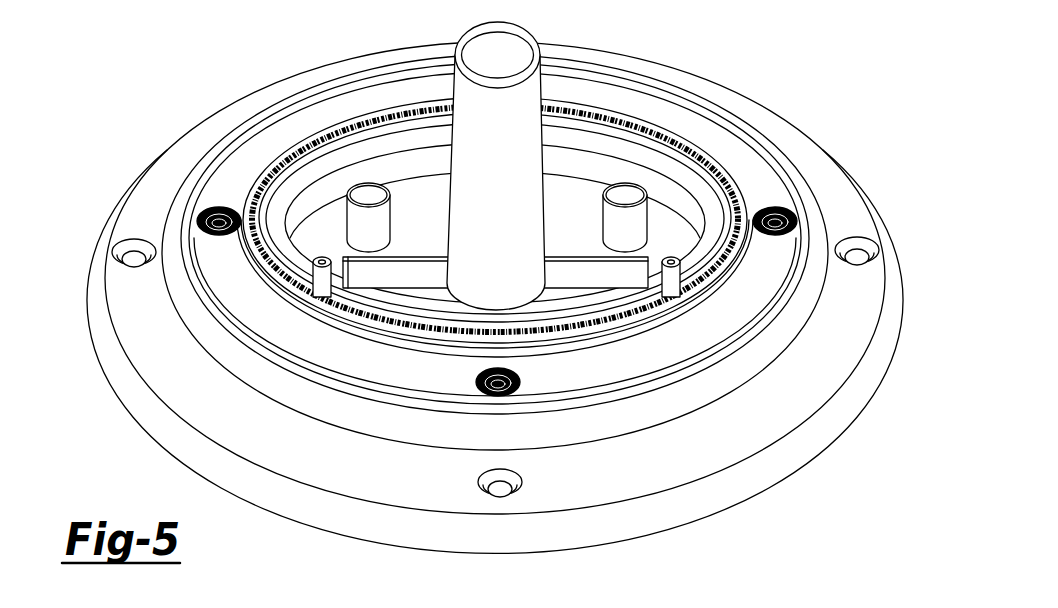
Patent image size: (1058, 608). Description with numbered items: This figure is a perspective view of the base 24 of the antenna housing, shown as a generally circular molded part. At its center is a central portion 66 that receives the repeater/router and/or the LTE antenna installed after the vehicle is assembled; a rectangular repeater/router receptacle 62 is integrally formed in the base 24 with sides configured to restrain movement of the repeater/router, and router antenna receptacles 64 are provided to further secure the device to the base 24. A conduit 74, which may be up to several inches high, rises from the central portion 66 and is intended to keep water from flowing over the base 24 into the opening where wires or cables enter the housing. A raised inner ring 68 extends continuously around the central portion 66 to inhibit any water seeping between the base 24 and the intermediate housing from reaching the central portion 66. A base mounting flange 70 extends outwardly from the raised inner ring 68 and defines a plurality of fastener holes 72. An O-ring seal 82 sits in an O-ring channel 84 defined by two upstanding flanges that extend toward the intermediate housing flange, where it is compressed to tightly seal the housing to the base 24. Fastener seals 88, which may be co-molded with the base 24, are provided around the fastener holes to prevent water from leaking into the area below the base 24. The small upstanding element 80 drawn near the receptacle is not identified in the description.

The base 24 is at (750, 103).
The repeater/router receptacle 62 is at (553, 307).
The router antenna receptacle 64 is at (370, 200).
The central portion 66 is at (390, 170).
The raised inner ring 68 is at (770, 185).
The base mounting flange 70 is at (163, 167).
The fastener hole 72 is at (131, 256).
The conduit 74 is at (533, 88).
The locating pins 80 is at (328, 253).
The O-ring seal 82 is at (647, 123).
The O-ring channel 84 is at (707, 288).
The fastener seal 88 is at (787, 213).